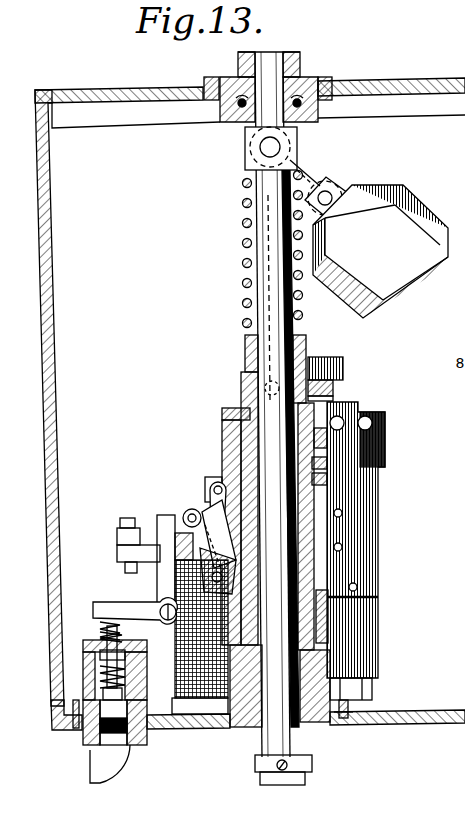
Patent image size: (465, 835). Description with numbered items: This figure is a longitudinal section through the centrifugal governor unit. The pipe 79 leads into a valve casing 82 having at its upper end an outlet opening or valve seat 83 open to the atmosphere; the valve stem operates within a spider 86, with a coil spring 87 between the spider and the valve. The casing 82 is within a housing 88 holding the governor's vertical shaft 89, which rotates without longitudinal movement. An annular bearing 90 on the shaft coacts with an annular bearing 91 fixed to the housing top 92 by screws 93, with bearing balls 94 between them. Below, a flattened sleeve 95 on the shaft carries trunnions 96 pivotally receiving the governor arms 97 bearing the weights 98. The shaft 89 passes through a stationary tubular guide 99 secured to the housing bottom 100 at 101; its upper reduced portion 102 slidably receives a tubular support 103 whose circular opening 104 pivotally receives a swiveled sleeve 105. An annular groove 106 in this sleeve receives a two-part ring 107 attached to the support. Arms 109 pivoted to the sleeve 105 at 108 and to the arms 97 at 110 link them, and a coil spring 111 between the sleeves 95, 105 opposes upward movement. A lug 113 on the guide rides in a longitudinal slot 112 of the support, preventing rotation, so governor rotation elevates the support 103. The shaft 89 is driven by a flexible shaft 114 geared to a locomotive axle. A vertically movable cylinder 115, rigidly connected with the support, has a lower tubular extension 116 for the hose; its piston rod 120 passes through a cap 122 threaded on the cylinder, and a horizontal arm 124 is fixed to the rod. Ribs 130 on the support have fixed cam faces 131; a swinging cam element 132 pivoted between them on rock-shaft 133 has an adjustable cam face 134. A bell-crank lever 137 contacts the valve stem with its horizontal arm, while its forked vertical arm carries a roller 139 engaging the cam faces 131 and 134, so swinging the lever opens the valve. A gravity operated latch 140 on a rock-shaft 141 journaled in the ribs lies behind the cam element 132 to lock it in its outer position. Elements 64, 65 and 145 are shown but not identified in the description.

The valve stem 64 is at (108, 661).
The spring 65 is at (76, 643).
The pipe 79 is at (116, 763).
The valve casing 82 is at (100, 684).
The outlet opening 83 is at (88, 652).
The spider 86 is at (103, 698).
The compressible coil spring 87 is at (133, 678).
The housing 88 is at (67, 705).
The vertical shaft 89 is at (280, 504).
The annular bearing 90 is at (300, 76).
The coacting annular bearing 91 is at (318, 118).
The top of the housing 92 is at (433, 80).
The screws 93 is at (331, 80).
The bearing balls 94 is at (213, 77).
The sleeve 95 is at (258, 160).
The trunnions 96 is at (282, 147).
The arms 97 is at (318, 181).
The weights 98 is at (380, 251).
The stationary tubular guide 99 is at (318, 667).
The bottom of the housing 100 is at (458, 712).
The attachment point 101 is at (351, 721).
The upper reduced portion 102 is at (327, 612).
The tubular support 103 is at (379, 597).
The circular opening 104 is at (327, 446).
The swiveled tubular connection 105 is at (306, 348).
The annular groove 106 is at (333, 398).
The two-part ring 107 is at (224, 410).
The pivotal connection 108 is at (264, 385).
The arms 109 is at (248, 299).
The pivotal connection 110 is at (332, 195).
The compressible coil spring 111 is at (244, 266).
The longitudinal slot 112 is at (322, 568).
The lug 113 is at (328, 480).
The flexible shaft 114 is at (302, 776).
The vertically movable cylinder 115 is at (386, 634).
The tubular extension 116 is at (372, 686).
The piston rod 120 is at (330, 386).
The cap 122 is at (387, 424).
The horizontal arm 124 is at (326, 366).
The ribs 130 is at (213, 484).
The fixed cam faces 131 is at (208, 502).
The swinging cam element 132 is at (186, 512).
The rock-shaft 133 is at (208, 492).
The cam face 134 is at (118, 545).
The bell-crank lever 137 is at (176, 573).
The roller 139 is at (122, 522).
The gravity operated latch 140 is at (158, 603).
The rock-shaft 141 is at (118, 560).
The spring 145 is at (100, 612).